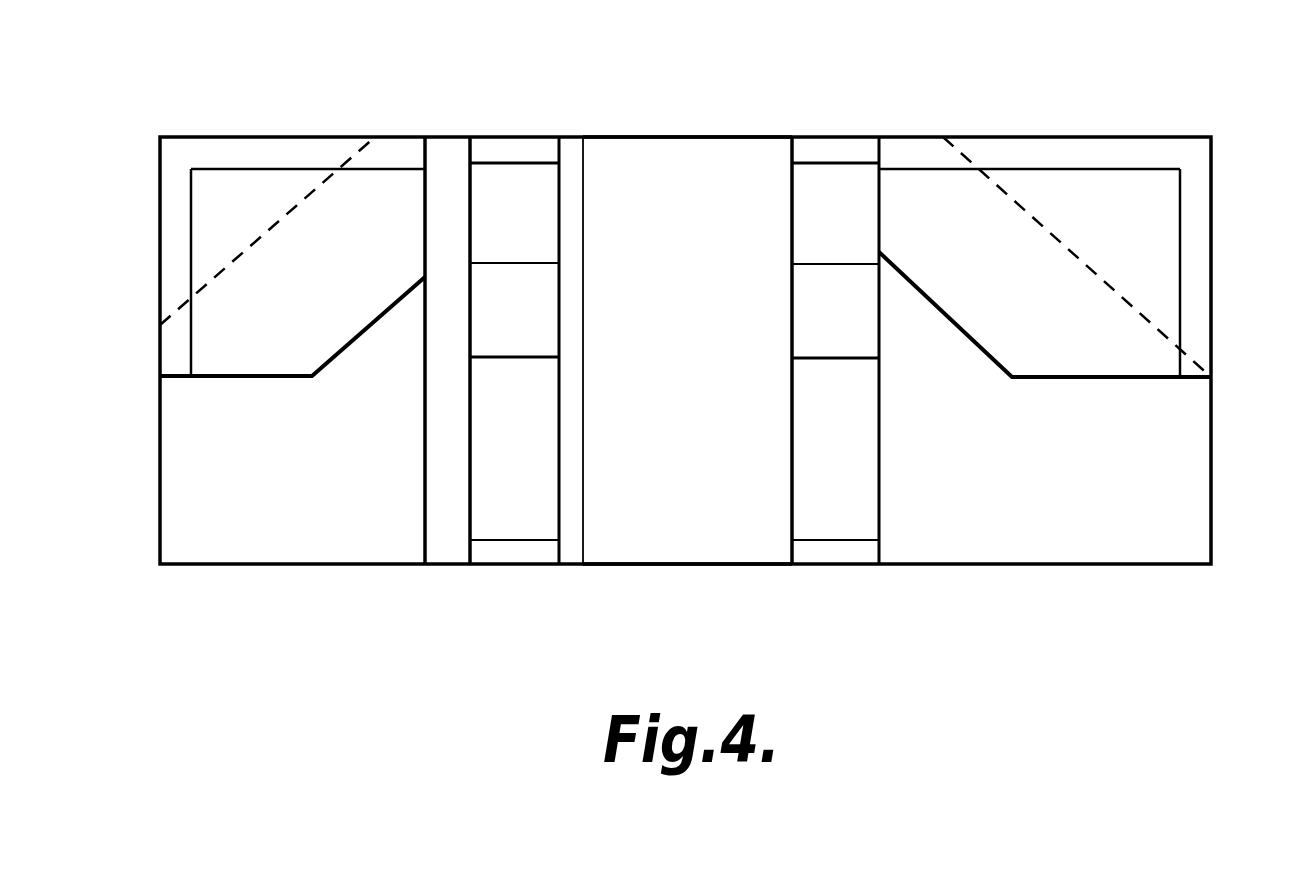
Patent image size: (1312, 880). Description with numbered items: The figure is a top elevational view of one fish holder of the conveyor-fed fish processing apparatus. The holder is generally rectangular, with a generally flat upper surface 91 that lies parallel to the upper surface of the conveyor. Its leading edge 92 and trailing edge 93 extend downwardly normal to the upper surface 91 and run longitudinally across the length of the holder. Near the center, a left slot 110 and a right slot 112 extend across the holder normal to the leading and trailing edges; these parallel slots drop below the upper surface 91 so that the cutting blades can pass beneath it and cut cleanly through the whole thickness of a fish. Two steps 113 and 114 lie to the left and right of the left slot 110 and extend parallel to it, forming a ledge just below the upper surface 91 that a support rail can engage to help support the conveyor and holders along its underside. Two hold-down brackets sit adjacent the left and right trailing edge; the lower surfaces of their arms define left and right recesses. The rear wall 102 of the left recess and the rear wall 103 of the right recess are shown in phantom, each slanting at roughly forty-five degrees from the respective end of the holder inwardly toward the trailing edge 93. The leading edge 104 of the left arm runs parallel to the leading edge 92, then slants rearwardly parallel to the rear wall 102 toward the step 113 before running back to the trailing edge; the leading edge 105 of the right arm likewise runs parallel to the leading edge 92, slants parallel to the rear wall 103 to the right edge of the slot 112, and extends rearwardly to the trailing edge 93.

The upper surface 91 is at (726, 190).
The leading edge 92 is at (687, 564).
The trailing edge 93 is at (686, 137).
The rear wall of left recess 102 is at (290, 207).
The rear wall of right recess 103 is at (1027, 212).
The leading edge of left arm 104 is at (233, 376).
The leading edge of right arm 105 is at (1137, 377).
The left slot 110 is at (515, 518).
The right slot 112 is at (831, 520).
The step 113 is at (443, 550).
The step 114 is at (570, 550).